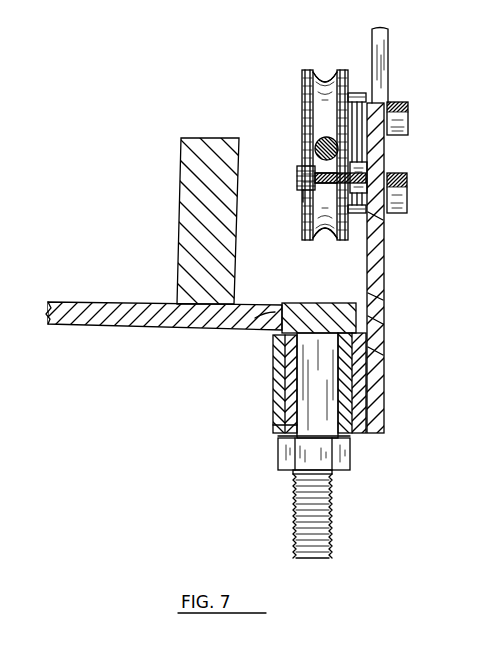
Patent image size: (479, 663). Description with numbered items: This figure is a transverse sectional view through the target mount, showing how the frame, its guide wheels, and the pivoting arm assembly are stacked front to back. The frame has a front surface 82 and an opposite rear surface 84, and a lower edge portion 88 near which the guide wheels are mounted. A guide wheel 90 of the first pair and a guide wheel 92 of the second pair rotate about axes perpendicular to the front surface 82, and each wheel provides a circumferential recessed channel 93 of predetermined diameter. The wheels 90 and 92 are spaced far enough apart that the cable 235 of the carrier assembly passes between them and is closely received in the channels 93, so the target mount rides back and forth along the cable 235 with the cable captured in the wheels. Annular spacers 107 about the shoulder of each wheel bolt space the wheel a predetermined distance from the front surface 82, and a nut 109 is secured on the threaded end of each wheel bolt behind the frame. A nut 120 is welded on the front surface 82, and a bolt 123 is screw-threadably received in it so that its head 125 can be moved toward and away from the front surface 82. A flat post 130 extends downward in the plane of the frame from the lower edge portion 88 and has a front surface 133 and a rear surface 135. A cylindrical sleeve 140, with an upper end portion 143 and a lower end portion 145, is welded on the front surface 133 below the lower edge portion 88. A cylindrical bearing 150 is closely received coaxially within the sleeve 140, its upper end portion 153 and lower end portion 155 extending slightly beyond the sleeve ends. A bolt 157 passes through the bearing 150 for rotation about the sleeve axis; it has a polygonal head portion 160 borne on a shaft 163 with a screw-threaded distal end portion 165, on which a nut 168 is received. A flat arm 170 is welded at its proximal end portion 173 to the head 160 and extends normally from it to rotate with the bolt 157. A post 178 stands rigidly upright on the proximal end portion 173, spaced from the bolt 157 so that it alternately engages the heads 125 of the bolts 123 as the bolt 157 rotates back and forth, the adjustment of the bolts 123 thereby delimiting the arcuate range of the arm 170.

The front surface 82 is at (368, 124).
The rear surface 84 is at (388, 168).
The lower edge portion 88 is at (376, 215).
The guide wheels of the first pair 90 is at (304, 90).
The guide wheels of the second pair 92 is at (304, 229).
The circumferential recessed channel 93 is at (332, 80).
The annular spacers 107 is at (360, 93).
The nut 109 is at (400, 101).
The nuts 120 is at (360, 163).
The bolts 123 is at (306, 196).
The head 125 is at (298, 175).
The post 130 is at (370, 351).
The front surface of the post 133 is at (368, 296).
The rear surface of the post 135 is at (371, 277).
The cylindrical sleeve 140 is at (356, 378).
The upper end portion of the sleeve 143 is at (373, 322).
The lower end portion of the sleeve 145 is at (352, 440).
The cylindrical bearing 150 is at (275, 422).
The upper end portion of the bearing 153 is at (276, 341).
The lower end portion of the bearing 155 is at (279, 449).
The bolt 157 is at (308, 561).
The polygonal head portion 160 is at (300, 303).
The shaft 163 is at (305, 386).
The screw-threaded distal end portion 165 is at (333, 517).
The nut 168 is at (350, 463).
The arm 170 is at (150, 303).
The proximal end portion 173 is at (268, 313).
The post 178 is at (187, 152).
The cable 235 is at (316, 150).